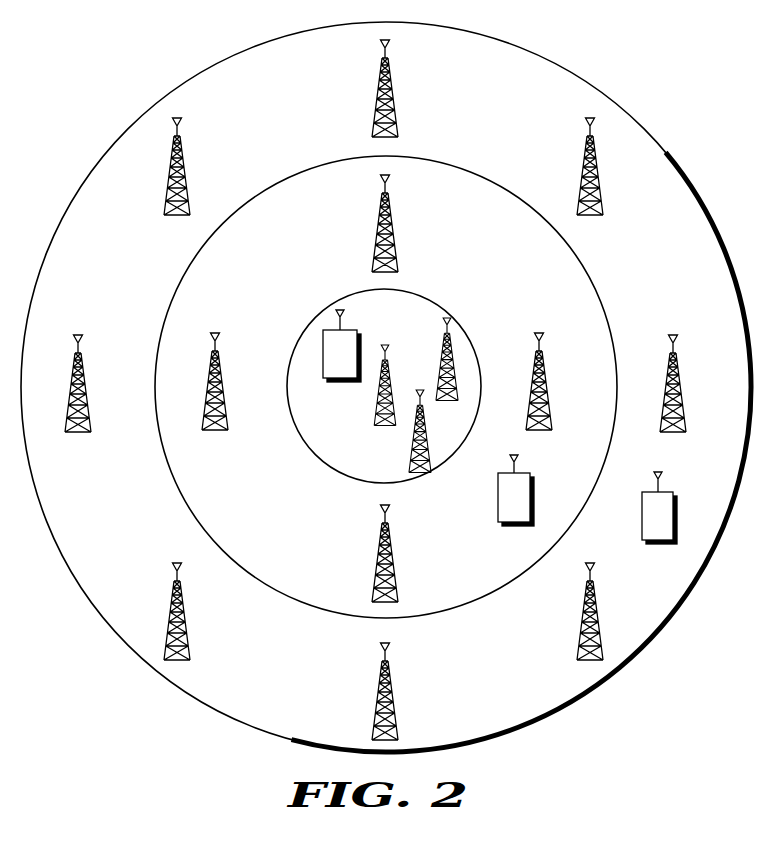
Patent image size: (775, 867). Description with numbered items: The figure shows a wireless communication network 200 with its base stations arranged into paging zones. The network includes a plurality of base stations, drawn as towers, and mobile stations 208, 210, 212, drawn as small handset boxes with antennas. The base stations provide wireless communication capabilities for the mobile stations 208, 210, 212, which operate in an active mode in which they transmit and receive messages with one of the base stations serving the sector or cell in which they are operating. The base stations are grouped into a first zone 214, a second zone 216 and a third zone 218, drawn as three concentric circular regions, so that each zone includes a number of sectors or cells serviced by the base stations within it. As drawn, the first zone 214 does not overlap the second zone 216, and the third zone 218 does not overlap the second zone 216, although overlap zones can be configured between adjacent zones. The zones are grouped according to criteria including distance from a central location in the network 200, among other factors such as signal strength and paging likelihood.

The wireless communication network 200 is at (624, 758).
The mobile station 208 is at (357, 338).
The mobile station 210 is at (498, 488).
The mobile station 212 is at (642, 507).
The first zone 214 is at (357, 456).
The second zone 216 is at (281, 536).
The third zone 218 is at (296, 696).